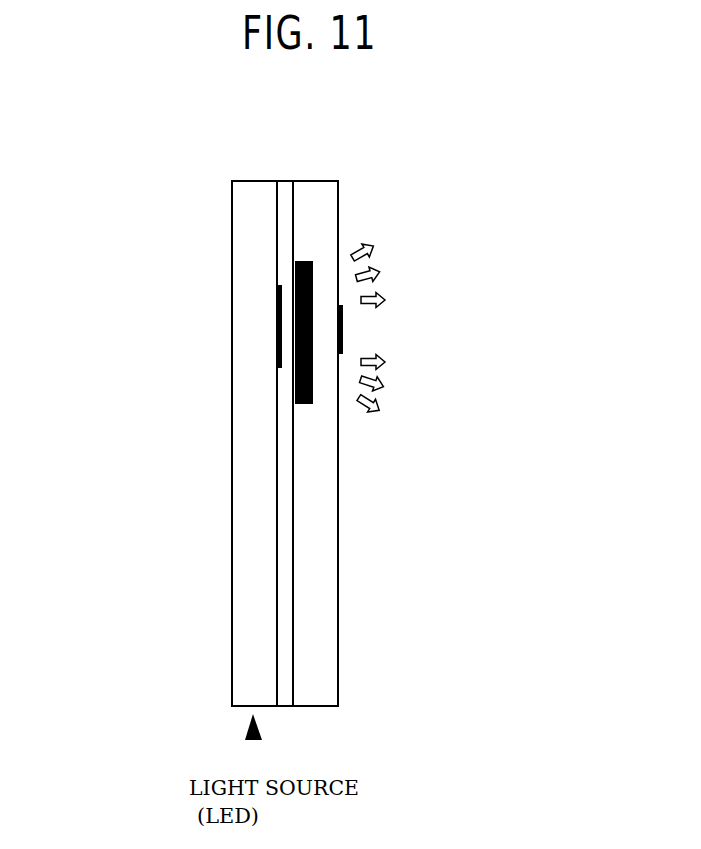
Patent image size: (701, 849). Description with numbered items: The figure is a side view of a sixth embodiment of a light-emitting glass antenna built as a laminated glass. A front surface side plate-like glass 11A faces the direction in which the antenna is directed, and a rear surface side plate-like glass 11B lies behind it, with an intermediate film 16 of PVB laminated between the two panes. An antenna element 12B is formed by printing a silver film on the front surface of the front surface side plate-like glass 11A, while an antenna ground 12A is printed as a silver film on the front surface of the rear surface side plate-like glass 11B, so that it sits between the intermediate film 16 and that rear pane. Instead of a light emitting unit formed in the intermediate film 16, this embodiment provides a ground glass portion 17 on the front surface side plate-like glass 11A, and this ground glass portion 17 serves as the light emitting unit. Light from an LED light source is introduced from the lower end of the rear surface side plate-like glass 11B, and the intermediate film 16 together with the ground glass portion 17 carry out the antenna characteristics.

The front surface side plate-like glass 11A is at (320, 181).
The rear surface side plate-like glass 11B is at (260, 181).
The antenna ground 12A is at (278, 345).
The antenna element 12B is at (342, 323).
The intermediate film 16 is at (285, 181).
The ground glass portion 17 is at (298, 384).